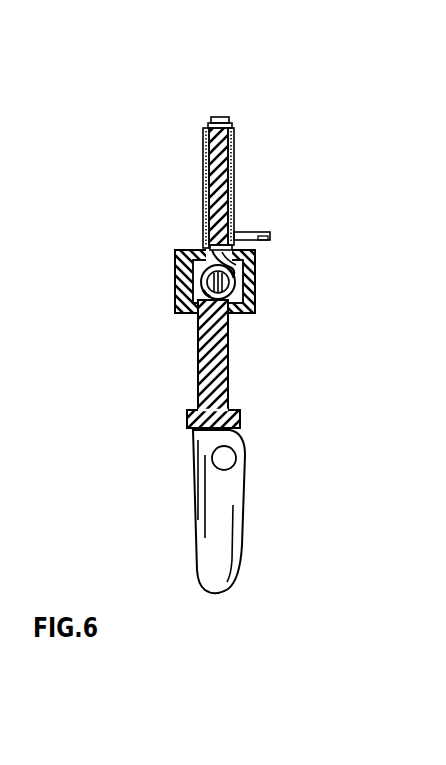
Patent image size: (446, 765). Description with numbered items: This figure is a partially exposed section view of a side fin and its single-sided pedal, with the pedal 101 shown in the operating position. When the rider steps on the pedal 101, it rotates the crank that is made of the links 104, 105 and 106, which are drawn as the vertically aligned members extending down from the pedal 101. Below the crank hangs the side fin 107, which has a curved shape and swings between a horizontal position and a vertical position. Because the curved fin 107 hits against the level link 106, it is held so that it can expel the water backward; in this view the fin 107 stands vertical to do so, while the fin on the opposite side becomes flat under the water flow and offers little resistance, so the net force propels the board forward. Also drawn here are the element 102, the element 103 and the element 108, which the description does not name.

The pedal 101 is at (237, 129).
The flange plate 102 is at (268, 238).
The cam / pivot disc 103 is at (258, 263).
The link 104 is at (176, 253).
The link 105 is at (228, 360).
The level link 106 is at (190, 412).
The side fin 107 is at (203, 491).
The hole in handle 108 is at (226, 456).